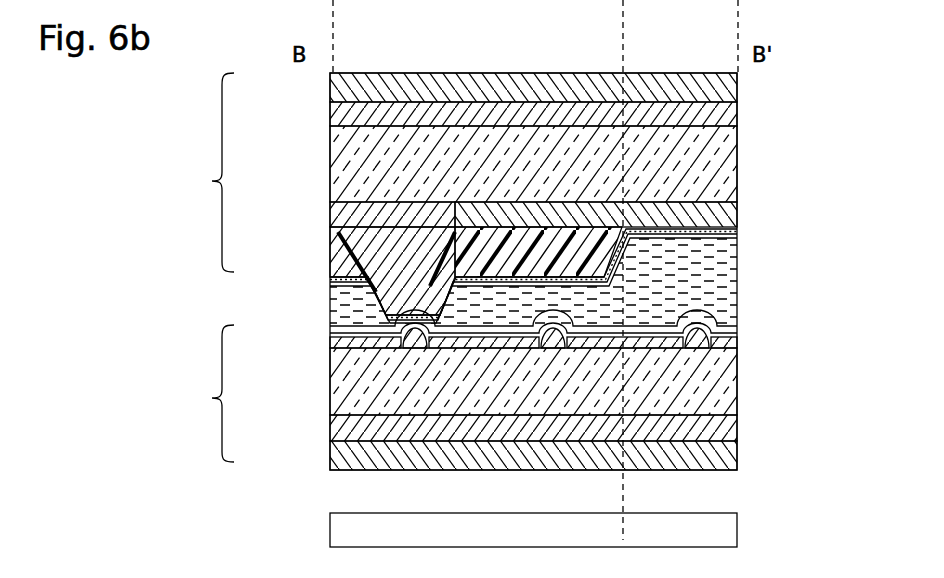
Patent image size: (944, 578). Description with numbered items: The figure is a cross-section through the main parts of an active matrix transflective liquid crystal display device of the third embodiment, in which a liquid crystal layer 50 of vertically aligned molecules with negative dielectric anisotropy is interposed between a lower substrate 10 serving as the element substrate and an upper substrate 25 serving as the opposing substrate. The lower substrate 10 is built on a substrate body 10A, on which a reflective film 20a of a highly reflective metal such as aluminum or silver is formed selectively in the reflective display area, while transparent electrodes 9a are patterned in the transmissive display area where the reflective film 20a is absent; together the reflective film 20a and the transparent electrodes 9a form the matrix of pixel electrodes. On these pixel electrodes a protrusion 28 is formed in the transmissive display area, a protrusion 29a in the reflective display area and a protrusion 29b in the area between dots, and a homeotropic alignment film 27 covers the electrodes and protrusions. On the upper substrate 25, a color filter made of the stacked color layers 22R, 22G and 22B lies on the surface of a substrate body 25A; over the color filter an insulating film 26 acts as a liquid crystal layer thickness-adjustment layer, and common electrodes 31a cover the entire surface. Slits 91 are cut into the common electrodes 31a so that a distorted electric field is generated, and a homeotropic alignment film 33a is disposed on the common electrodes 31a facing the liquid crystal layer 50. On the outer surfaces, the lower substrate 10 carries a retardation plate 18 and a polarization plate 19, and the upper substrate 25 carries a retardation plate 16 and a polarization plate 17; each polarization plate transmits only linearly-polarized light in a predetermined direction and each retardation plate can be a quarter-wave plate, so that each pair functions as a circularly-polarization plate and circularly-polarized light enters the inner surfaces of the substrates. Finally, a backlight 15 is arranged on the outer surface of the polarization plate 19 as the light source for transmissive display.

The polarization plate 17 is at (738, 86).
The retardation plate 16 is at (738, 112).
The substrate body 25A is at (738, 148).
The blue color layer 22B is at (335, 210).
The red color layer 22R is at (738, 214).
The green color layer 22G is at (345, 250).
The insulating film 26 is at (345, 240).
The common electrodes 31a is at (738, 230).
The homeotropic alignment film 33a is at (738, 238).
The liquid crystal layer 50 is at (738, 300).
The protrusion 28 is at (738, 292).
The homeotropic alignment film 27 is at (738, 335).
The protrusion 29a is at (398, 330).
The protrusion 29b is at (553, 312).
The transparent electrodes 9a is at (738, 348).
The reflective film 20a is at (420, 350).
The substrate body 10A is at (738, 400).
The retardation plate 18 is at (738, 434).
The polarization plate 19 is at (738, 460).
The backlight 15 is at (738, 527).
The slits 91 is at (482, 277).
The upper substrate 25 is at (205, 172).
The lower substrate 10 is at (205, 393).